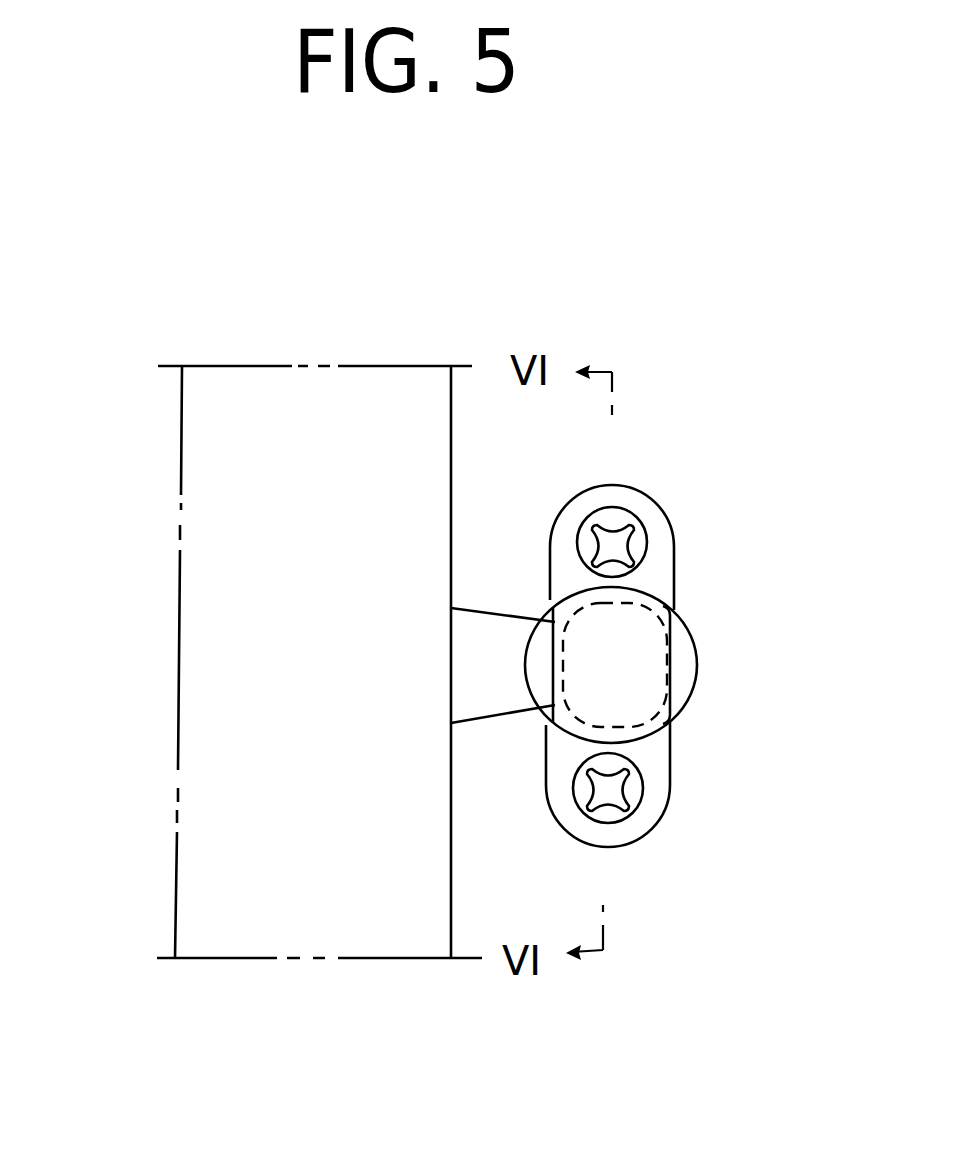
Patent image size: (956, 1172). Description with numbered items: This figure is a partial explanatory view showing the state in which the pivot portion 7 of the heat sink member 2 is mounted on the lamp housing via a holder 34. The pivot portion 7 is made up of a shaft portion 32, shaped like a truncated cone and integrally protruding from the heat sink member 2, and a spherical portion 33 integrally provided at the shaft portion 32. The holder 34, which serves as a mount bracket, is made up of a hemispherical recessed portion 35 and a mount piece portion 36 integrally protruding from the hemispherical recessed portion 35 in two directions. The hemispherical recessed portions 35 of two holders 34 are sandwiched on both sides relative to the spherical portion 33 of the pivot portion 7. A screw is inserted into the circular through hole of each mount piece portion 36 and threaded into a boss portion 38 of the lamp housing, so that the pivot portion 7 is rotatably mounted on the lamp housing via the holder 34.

The heat sink member 2 is at (182, 443).
The shaft portion 32 is at (481, 637).
The pivot portion 7 is at (518, 616).
The holder 34 is at (675, 535).
The hemispherical recessed portion 35 is at (683, 677).
The spherical portion 33 is at (633, 630).
The mount piece portion 36 is at (620, 495).
The boss portion 38 is at (632, 515).